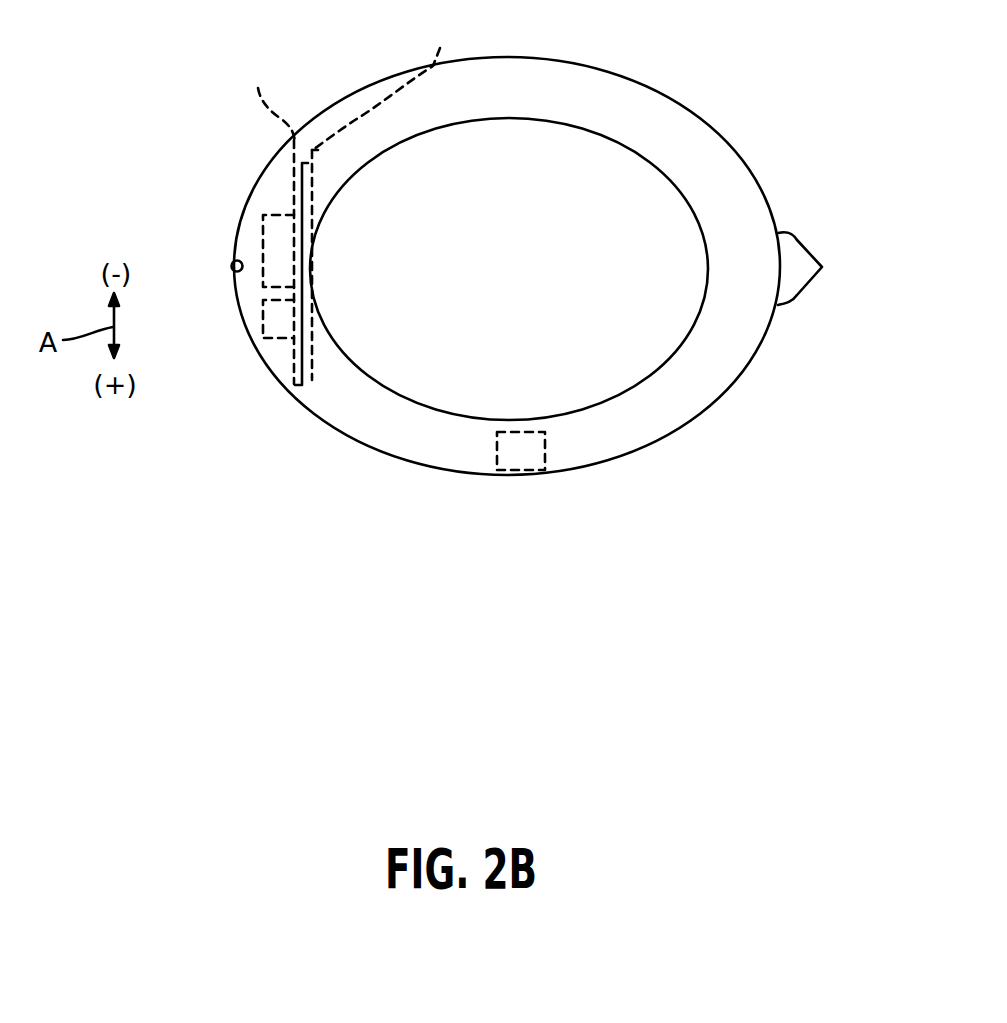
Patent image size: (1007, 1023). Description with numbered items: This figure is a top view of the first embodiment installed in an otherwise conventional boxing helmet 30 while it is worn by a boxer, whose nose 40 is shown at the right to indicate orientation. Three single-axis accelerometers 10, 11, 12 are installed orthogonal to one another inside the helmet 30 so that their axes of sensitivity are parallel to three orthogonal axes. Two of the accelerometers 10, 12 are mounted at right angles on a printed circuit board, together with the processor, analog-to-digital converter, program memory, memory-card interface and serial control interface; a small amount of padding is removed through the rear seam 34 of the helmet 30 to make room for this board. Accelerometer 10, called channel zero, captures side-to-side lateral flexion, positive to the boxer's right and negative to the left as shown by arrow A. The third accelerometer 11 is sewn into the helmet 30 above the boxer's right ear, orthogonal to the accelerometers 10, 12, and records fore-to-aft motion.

The helmet 30 is at (605, 75).
The nose 40 is at (822, 267).
The accelerometer 10 is at (293, 339).
The accelerometer 12 is at (286, 214).
The rear seam 34 is at (236, 268).
The accelerometer 11 is at (527, 472).